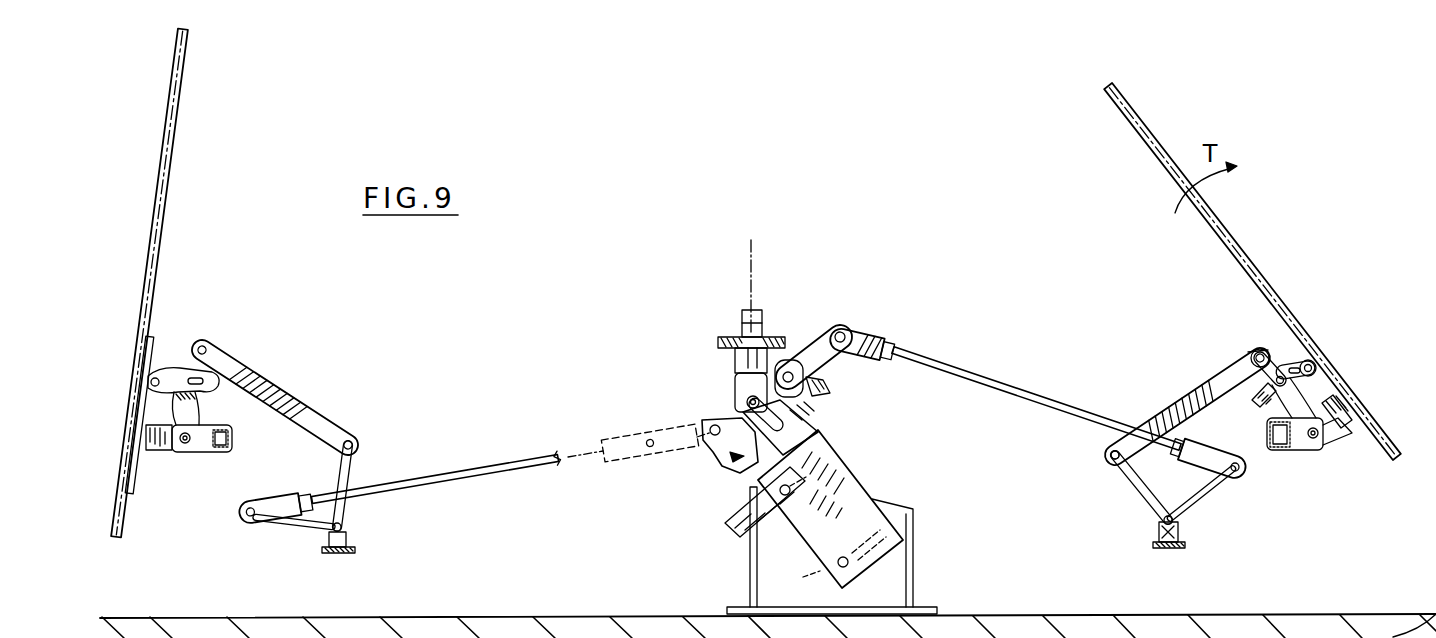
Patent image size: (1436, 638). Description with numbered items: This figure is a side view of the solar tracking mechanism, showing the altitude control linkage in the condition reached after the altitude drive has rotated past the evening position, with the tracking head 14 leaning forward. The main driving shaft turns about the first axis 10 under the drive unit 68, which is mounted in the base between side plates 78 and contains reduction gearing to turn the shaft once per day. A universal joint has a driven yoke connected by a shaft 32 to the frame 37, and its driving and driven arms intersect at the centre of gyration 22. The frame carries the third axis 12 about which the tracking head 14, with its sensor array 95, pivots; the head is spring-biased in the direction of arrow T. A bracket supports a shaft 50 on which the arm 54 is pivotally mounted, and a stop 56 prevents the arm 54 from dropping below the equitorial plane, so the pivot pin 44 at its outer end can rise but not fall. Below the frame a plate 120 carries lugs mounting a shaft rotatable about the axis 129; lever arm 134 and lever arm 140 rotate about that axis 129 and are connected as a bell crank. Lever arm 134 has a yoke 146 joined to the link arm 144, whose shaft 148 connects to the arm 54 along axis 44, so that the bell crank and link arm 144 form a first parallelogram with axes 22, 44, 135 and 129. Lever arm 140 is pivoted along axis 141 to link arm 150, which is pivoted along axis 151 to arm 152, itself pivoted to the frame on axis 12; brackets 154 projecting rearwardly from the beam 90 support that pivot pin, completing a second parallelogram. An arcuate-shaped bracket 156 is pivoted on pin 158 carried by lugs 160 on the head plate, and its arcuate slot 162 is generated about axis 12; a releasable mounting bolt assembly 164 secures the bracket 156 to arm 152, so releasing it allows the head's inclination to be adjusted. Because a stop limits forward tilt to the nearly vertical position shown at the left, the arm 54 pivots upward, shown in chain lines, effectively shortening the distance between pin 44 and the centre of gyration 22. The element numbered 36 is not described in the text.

The first axis 10 is at (742, 378).
The third axis 12 is at (1316, 438).
The tracking head 14 is at (128, 342).
The centre of gyration 22 is at (748, 397).
The shaft 32 is at (740, 337).
The bearing block 36 is at (735, 359).
The frame 37 is at (737, 337).
The pivot pin 44 is at (835, 330).
The shaft 50 is at (768, 337).
The arm 54 is at (790, 370).
The stop 56 is at (812, 380).
The drive unit 68 is at (853, 473).
The side plates 78 is at (912, 517).
The beam 90 is at (220, 452).
The sensor array 95 is at (157, 187).
The plate 120 is at (338, 553).
The axis 129 is at (348, 530).
The lever arm 134 is at (306, 527).
The axis 135 is at (1247, 478).
The lever arm 140 is at (354, 468).
The axis 141 is at (1104, 453).
The link arm 144 is at (544, 457).
The yoke 146 is at (259, 521).
The shaft 148 is at (866, 340).
The link arm 150 is at (282, 392).
The axis 151 is at (1250, 352).
The arm 152 is at (172, 407).
The brackets 154 is at (193, 450).
The arcuate-shaped bracket 156 is at (1287, 357).
The pivot pin 158 is at (1315, 372).
The lugs 160 is at (1308, 356).
The arcuate-shaped slot 162 is at (1256, 403).
The releasable mounting bolt assembly 164 is at (1252, 357).